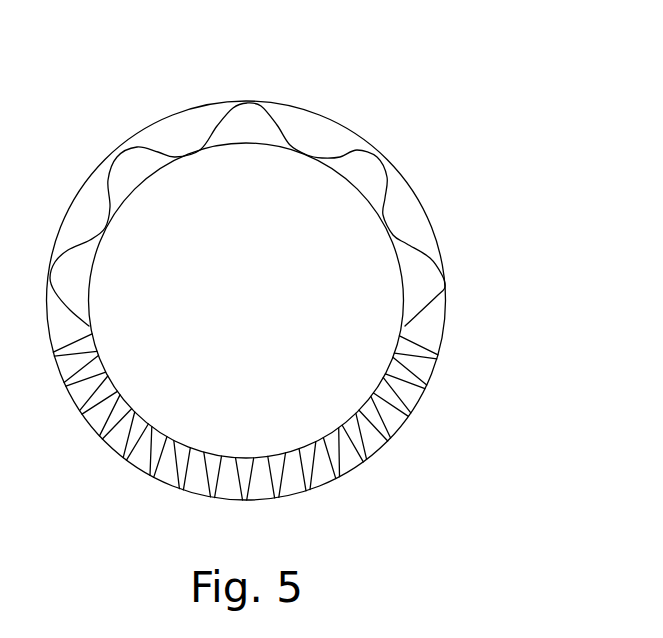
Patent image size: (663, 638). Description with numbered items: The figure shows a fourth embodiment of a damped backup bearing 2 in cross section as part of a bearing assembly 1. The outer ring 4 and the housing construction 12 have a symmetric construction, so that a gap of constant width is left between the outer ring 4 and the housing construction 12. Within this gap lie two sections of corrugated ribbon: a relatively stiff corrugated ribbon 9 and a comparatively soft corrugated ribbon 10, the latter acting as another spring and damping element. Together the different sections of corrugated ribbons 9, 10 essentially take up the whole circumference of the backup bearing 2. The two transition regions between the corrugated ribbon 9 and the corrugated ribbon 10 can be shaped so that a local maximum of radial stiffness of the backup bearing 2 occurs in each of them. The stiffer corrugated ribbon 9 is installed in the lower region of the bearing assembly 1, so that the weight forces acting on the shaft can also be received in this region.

The bearing assembly 1 is at (246, 253).
The backup bearing 2 is at (294, 287).
The outer ring 4 is at (350, 177).
The corrugated ribbon 9 is at (338, 461).
The corrugated ribbon 10 is at (407, 243).
The housing construction 12 is at (301, 115).